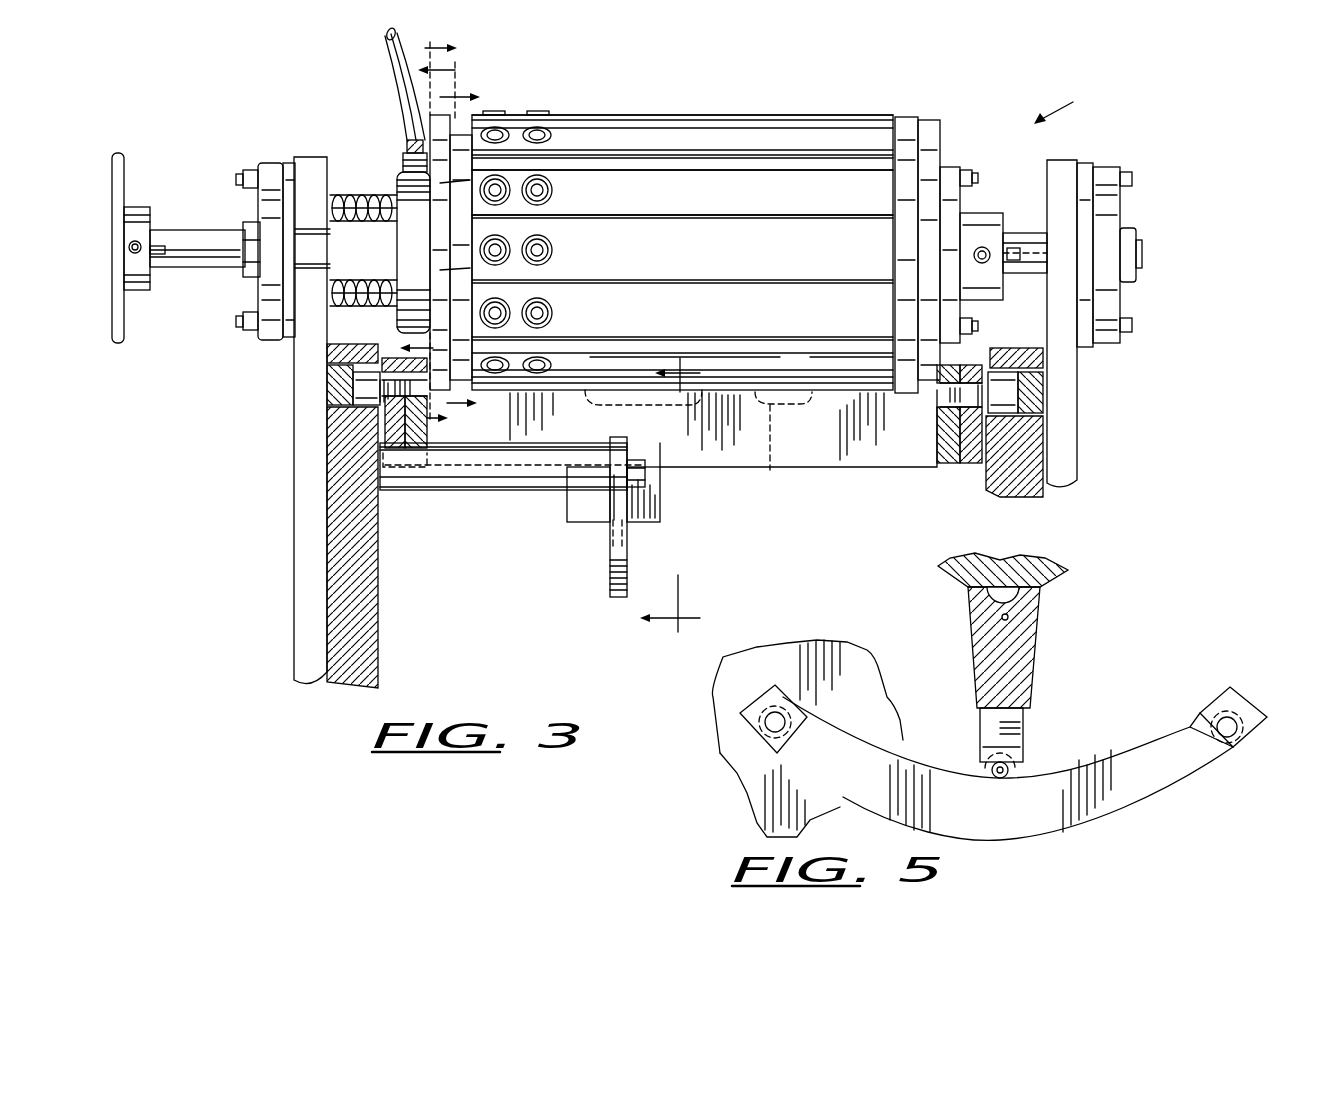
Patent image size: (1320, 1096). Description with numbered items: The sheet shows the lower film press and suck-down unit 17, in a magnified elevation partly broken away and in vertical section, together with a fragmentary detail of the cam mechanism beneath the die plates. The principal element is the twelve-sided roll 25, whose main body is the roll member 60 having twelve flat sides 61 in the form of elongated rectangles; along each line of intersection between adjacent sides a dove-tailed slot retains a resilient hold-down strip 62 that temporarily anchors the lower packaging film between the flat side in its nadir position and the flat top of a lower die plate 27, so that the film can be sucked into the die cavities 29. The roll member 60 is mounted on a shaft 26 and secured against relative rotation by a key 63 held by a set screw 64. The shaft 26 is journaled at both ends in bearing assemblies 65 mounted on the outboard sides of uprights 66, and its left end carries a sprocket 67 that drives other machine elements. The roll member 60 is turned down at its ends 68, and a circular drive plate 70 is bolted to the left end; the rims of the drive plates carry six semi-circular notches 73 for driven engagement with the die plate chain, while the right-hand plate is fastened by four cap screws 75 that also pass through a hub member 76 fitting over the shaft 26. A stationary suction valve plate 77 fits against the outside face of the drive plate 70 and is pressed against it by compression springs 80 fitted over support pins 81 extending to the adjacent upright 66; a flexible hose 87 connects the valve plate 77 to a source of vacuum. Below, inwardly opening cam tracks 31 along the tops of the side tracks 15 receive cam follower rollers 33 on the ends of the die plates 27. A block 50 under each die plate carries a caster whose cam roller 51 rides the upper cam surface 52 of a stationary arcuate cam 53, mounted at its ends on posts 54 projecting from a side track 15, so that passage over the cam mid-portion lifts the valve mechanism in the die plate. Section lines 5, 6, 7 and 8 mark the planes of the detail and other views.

In FIG. 3, the side tracks 15 is at (1020, 490).
In FIG. 3, the lower film press and suck-down unit 17 is at (1071, 103).
In FIG. 3, the twelve-sided roll 25 is at (836, 122).
In FIG. 5, the twelve-sided roll 25 is at (1062, 582).
In FIG. 3, the shaft 26 is at (1030, 232).
In FIG. 3, the lower die plate 27 is at (838, 470).
In FIG. 5, the lower die plate 27 is at (1040, 658).
In FIG. 3, the die cavities 29 is at (698, 446).
In FIG. 5, the die cavities 29 is at (995, 597).
In FIG. 3, the cam tracks 31 is at (325, 385).
In FIG. 3, the cam follower rollers 33 is at (375, 398).
In FIG. 3, the block 50 is at (660, 490).
In FIG. 5, the block 50 is at (1023, 725).
In FIG. 3, the cam roller 51 is at (607, 527).
In FIG. 5, the cam roller 51 is at (1010, 770).
In FIG. 5, the cam surface 52 is at (1085, 750).
In FIG. 3, the stationary arcuate cam 53 is at (614, 553).
In FIG. 5, the stationary arcuate cam 53 is at (1213, 755).
In FIG. 3, the posts 54 is at (505, 488).
In FIG. 5, the posts 54 is at (1230, 735).
In FIG. 3, the roll member 60 is at (750, 120).
In FIG. 3, the flat sides 61 is at (656, 178).
In FIG. 3, the hold-down strips 62 is at (720, 222).
In FIG. 3, the key 63 is at (1010, 262).
In FIG. 3, the set screw 64 is at (982, 263).
In FIG. 3, the bearing assemblies 65 is at (283, 165).
In FIG. 3, the uprights 66 is at (1078, 455).
In FIG. 3, the sprocket 67 is at (118, 155).
In FIG. 3, the turned-down ends 68 is at (903, 130).
In FIG. 3, the drive plate 70 is at (440, 270).
In FIG. 3, the semi-circular notches 73 is at (440, 183).
In FIG. 3, the cap screws 75 is at (967, 170).
In FIG. 3, the hub member 76 is at (960, 210).
In FIG. 3, the suction valve plate 77 is at (400, 190).
In FIG. 3, the compression springs 80 is at (347, 280).
In FIG. 3, the support pins 81 is at (383, 280).
In FIG. 3, the flexible hose 87 is at (400, 90).
In FIG. 3, the section line 5— 5 is at (675, 504).
In FIG. 3, the section line 6— 6 is at (460, 251).
In FIG. 3, the section line 7— 7 is at (430, 210).
In FIG. 3, the section line 8— 8 is at (434, 237).